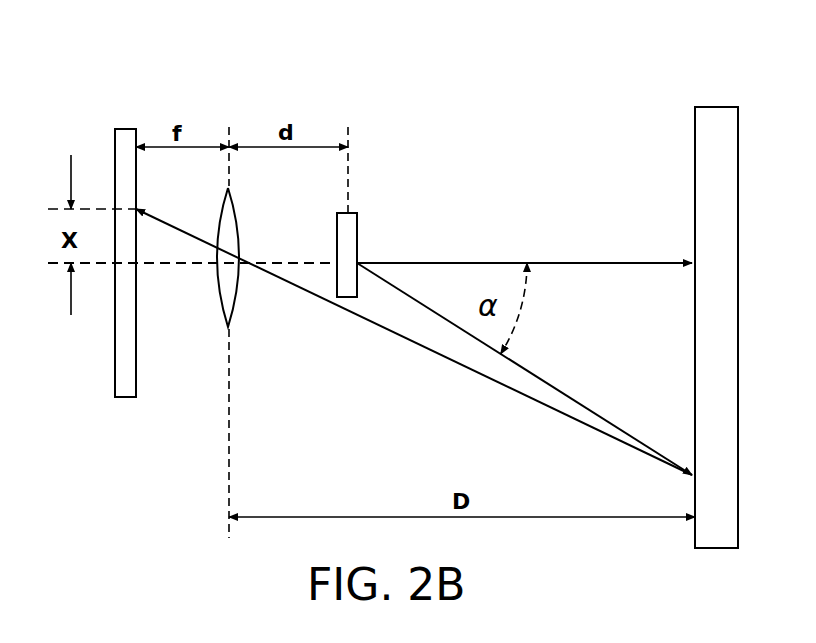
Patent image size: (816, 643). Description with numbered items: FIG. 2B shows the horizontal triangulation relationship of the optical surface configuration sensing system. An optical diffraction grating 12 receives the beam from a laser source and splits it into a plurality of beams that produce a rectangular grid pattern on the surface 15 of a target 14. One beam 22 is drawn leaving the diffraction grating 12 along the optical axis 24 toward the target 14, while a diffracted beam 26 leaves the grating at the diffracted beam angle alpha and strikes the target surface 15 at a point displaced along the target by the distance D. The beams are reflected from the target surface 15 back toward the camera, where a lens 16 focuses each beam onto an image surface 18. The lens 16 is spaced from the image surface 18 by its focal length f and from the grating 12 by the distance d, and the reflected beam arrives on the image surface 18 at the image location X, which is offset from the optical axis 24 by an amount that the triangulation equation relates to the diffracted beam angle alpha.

The optical diffraction grating 12 is at (357, 222).
The target 14 is at (716, 107).
The target surface 15 is at (695, 368).
The lens 16 is at (238, 308).
The image surface 18 is at (136, 370).
The incident beam 22 is at (626, 262).
The optical axis 24 is at (288, 262).
The reflected ray 26 is at (545, 378).